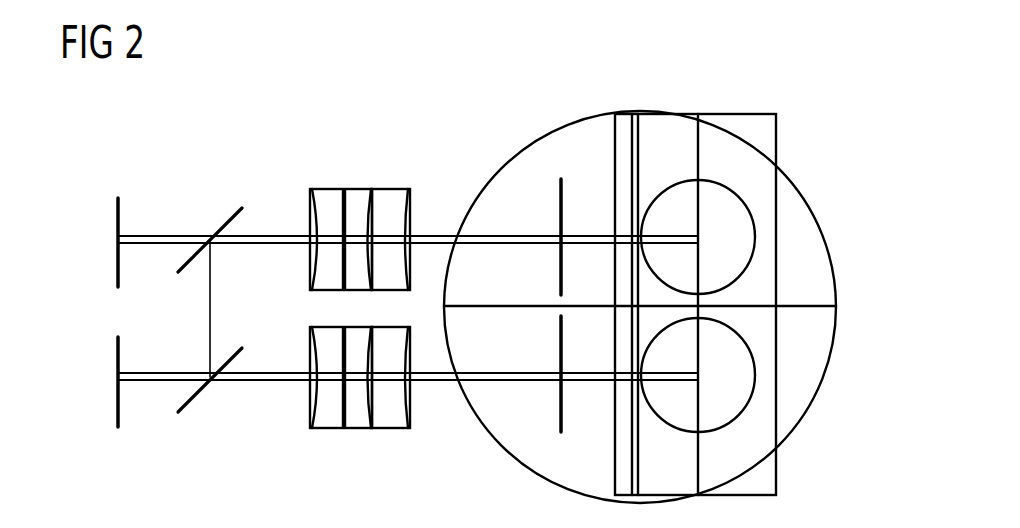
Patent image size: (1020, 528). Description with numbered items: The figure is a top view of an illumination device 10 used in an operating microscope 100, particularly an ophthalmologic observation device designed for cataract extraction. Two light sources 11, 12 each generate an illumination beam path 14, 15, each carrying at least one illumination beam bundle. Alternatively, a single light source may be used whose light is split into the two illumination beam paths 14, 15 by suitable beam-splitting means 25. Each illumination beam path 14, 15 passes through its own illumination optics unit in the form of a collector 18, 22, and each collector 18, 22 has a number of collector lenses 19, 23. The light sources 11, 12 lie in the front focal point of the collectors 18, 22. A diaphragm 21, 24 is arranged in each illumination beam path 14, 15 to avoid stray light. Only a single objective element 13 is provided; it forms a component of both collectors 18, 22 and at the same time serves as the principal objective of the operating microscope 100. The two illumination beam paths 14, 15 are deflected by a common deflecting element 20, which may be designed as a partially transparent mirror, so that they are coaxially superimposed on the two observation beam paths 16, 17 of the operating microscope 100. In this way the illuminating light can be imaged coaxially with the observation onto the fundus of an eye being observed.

The operating microscope 100 is at (750, 92).
The illumination device 10 is at (290, 155).
The light source 11 is at (116, 254).
The light source 12 is at (116, 392).
The objective element 13 is at (833, 332).
The illumination beam path 14 is at (168, 236).
The illumination beam path 15 is at (257, 385).
The observation beam path 16 is at (757, 237).
The observation beam path 17 is at (757, 375).
The collector 18 is at (445, 162).
The collector lenses 19 is at (360, 187).
The deflecting element 20 is at (777, 466).
The diaphragm 21 is at (559, 266).
The collector 22 is at (445, 415).
The collector lenses 23 is at (362, 430).
The diaphragm 24 is at (559, 338).
The beam-splitting means 25 is at (185, 302).